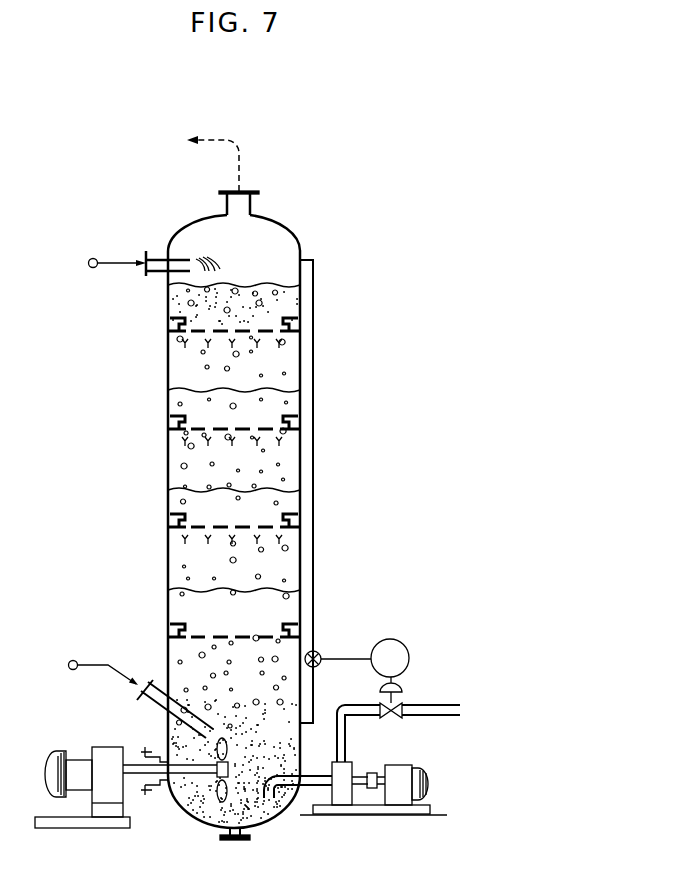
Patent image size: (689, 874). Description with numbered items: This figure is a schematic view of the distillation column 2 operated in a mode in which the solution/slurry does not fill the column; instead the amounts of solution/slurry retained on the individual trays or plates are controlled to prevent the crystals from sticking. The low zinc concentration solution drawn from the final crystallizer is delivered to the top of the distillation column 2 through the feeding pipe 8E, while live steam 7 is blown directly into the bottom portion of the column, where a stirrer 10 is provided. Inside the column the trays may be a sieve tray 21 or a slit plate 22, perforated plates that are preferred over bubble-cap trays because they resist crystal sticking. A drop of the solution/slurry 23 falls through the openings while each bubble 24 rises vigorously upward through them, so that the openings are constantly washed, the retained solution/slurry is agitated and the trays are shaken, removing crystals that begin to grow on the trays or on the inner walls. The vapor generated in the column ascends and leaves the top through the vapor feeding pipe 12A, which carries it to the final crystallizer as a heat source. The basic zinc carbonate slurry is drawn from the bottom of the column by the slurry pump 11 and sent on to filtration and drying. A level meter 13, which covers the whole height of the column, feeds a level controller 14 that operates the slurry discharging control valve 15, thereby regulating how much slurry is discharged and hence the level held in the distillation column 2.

The distillation column 2 is at (168, 484).
The live steam 7 is at (132, 696).
The feeding pipe 8E is at (115, 262).
The stirrer 10 is at (216, 790).
The slurry pump 11 is at (393, 774).
The vapor feeding pipe 12A is at (220, 143).
The level meter 13 is at (317, 653).
The level controller 14 is at (406, 647).
The slurry discharging control valve 15 is at (407, 697).
The sieve tray 21 is at (170, 337).
The slit plate 22 is at (169, 430).
The drop of the solution/slurry 23 is at (280, 570).
The bubble 24 is at (277, 407).